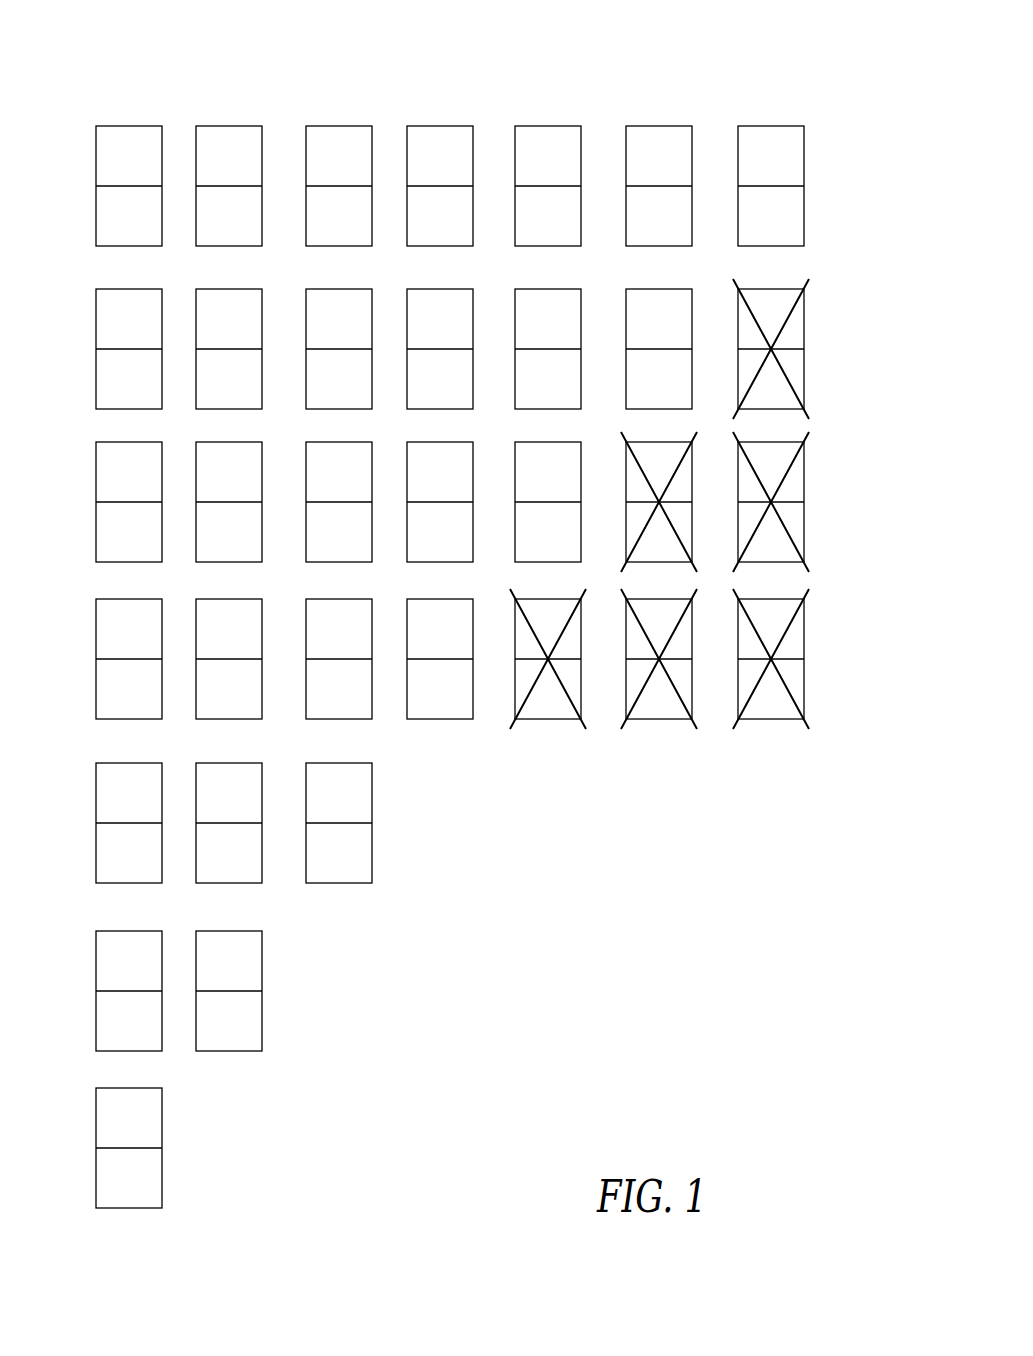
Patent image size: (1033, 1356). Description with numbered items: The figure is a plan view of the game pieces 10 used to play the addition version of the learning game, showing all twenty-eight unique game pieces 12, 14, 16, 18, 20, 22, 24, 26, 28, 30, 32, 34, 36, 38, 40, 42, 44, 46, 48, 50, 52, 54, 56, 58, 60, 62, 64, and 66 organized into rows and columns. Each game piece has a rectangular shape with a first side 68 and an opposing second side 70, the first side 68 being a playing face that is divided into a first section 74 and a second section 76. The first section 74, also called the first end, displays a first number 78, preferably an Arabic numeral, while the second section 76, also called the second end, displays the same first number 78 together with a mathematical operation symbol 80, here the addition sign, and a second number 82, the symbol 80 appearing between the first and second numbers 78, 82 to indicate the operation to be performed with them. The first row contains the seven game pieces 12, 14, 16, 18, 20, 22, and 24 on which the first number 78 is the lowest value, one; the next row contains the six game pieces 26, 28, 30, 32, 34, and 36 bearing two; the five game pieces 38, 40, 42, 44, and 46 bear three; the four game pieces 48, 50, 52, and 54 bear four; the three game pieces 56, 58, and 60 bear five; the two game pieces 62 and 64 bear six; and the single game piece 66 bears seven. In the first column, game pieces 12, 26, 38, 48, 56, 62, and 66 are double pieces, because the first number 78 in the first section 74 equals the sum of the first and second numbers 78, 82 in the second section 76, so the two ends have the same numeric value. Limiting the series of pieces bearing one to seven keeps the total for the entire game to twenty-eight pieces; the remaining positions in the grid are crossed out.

The game pieces 10 is at (548, 68).
The game piece 12 is at (132, 159).
The game piece 14 is at (232, 122).
The game piece 16 is at (342, 122).
The game piece 18 is at (443, 122).
The game piece 20 is at (551, 122).
The game piece 22 is at (662, 122).
The game piece 24 is at (774, 122).
The game piece 26 is at (112, 286).
The game piece 28 is at (230, 286).
The game piece 30 is at (340, 286).
The game piece 32 is at (441, 286).
The game piece 34 is at (549, 286).
The game piece 36 is at (660, 286).
The game piece 38 is at (132, 438).
The game piece 40 is at (232, 438).
The game piece 42 is at (342, 438).
The game piece 44 is at (443, 438).
The game piece 46 is at (551, 438).
The game piece 48 is at (132, 595).
The game piece 50 is at (232, 595).
The game piece 52 is at (342, 595).
The game piece 54 is at (443, 595).
The game piece 56 is at (132, 759).
The game piece 58 is at (232, 759).
The game piece 60 is at (342, 759).
The game piece 62 is at (132, 927).
The game piece 64 is at (232, 927).
The game piece 66 is at (132, 1084).
The first side 68 is at (122, 144).
The second side 70 is at (118, 143).
The first section 74 is at (138, 138).
The second section 76 is at (152, 200).
The first number 78 is at (143, 155).
The mathematical operation symbol 80 is at (125, 232).
The second number 82 is at (143, 230).